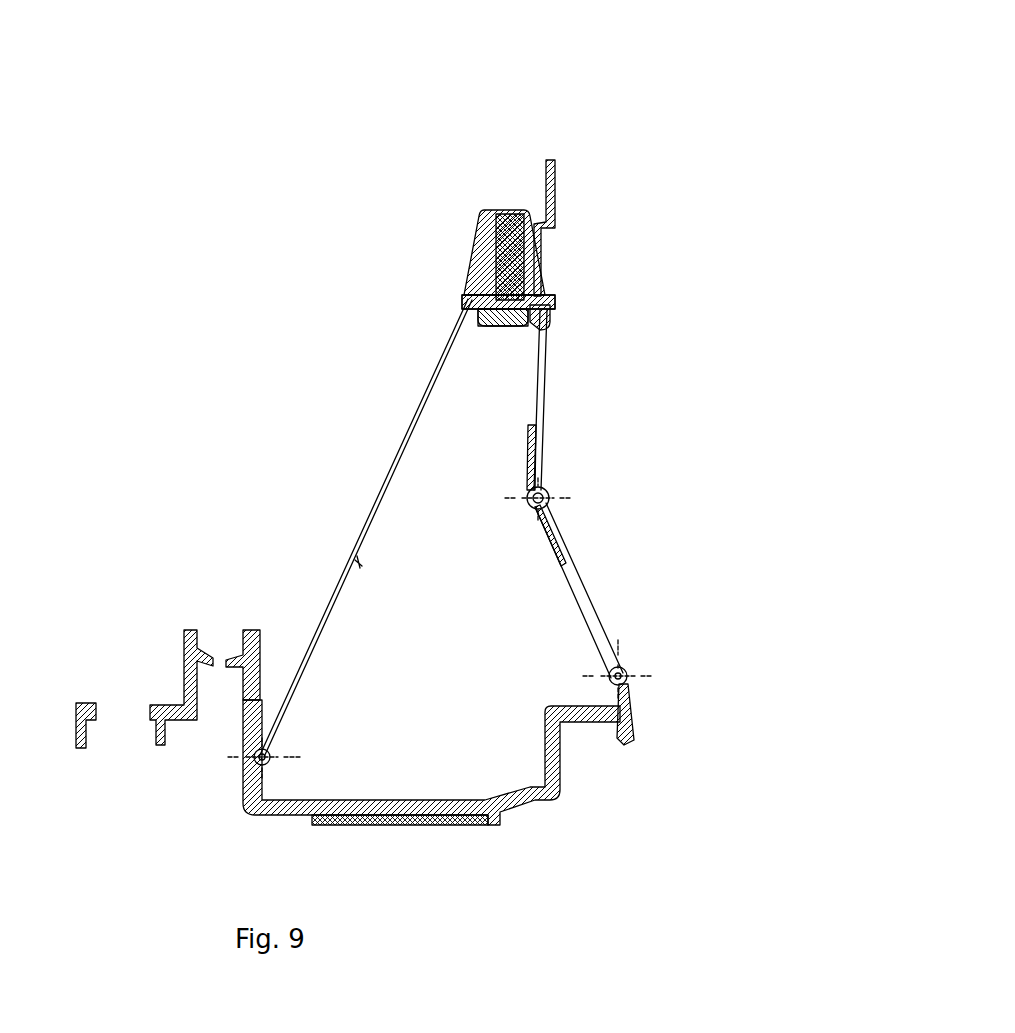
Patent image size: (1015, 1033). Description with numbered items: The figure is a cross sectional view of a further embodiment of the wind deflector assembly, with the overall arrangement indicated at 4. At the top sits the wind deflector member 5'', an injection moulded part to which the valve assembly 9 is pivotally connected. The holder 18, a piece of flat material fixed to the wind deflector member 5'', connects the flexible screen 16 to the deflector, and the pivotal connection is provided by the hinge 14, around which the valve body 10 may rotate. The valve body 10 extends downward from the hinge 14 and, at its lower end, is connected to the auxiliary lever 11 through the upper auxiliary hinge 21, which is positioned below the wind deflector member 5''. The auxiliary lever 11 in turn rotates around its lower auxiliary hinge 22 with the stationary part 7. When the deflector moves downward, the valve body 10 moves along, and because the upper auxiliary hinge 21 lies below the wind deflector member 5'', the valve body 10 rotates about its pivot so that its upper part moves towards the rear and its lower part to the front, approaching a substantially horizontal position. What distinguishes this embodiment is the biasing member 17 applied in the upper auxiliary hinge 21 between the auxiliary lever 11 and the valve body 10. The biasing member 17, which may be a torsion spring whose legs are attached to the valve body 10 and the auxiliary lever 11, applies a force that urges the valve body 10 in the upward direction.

The attachment device 4 is at (463, 237).
The wind deflector member 5'' is at (491, 183).
The stationary part 7 is at (557, 773).
The valve assembly 9 is at (548, 392).
The valve body 10 is at (558, 178).
The auxiliary lever 11 is at (583, 591).
The hinge 14 is at (553, 306).
The flexible screen 16 is at (375, 500).
The biasing member 17 is at (543, 430).
The holder 18 is at (522, 318).
The upper auxiliary hinge 21 is at (560, 490).
The lower auxiliary hinge 22 is at (626, 668).